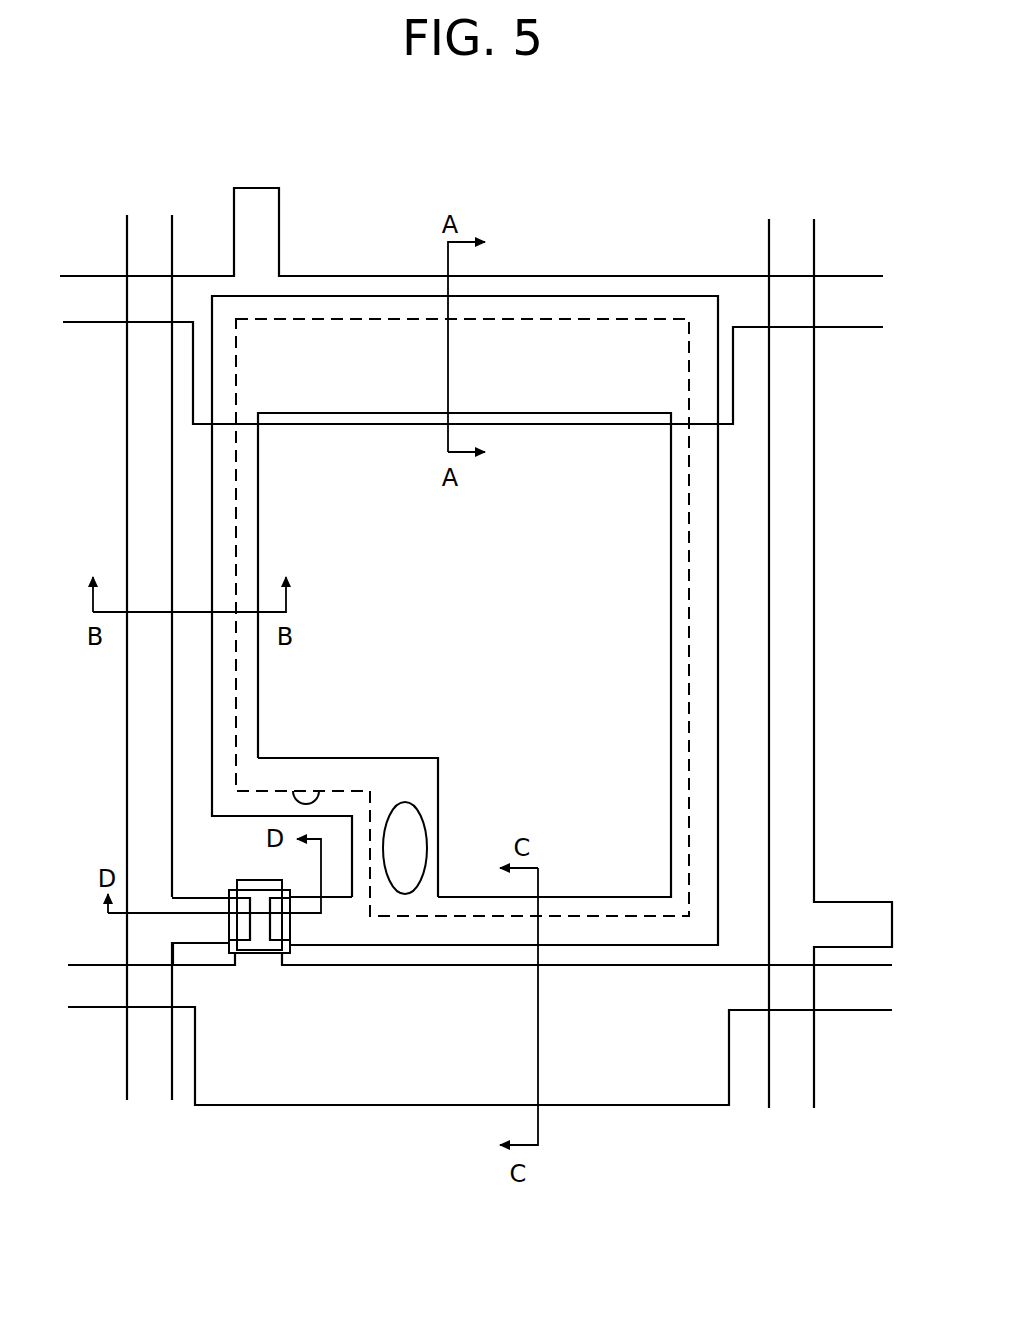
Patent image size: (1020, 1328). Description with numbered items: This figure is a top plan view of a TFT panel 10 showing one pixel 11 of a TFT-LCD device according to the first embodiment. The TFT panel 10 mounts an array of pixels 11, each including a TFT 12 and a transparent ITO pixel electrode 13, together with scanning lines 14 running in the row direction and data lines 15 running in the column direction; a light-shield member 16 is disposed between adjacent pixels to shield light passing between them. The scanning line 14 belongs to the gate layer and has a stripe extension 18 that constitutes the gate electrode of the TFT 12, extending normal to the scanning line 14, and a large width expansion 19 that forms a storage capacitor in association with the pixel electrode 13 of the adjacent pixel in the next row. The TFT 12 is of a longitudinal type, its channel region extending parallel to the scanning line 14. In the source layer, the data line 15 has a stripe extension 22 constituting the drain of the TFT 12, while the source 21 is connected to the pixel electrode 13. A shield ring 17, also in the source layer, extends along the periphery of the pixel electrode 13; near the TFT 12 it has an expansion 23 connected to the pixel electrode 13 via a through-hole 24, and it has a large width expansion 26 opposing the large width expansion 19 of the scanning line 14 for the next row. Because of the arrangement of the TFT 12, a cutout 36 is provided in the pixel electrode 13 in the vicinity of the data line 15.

The TFT panel 10 is at (526, 161).
The pixel 11 is at (720, 236).
The TFT 12 is at (262, 970).
The pixel electrode 13 is at (691, 635).
The scanning line 14 is at (852, 330).
The data line 15 is at (126, 500).
The light-shield member 16 is at (237, 500).
The shield ring 17 is at (720, 740).
The extension 18 is at (240, 880).
The large width expansion 19 is at (388, 426).
The source 21 is at (310, 943).
The stripe extension 22 is at (205, 943).
The expansion 23 is at (428, 798).
The through-hole 24 is at (405, 803).
The large width expansion 26 is at (593, 426).
The cutout 36 is at (318, 795).